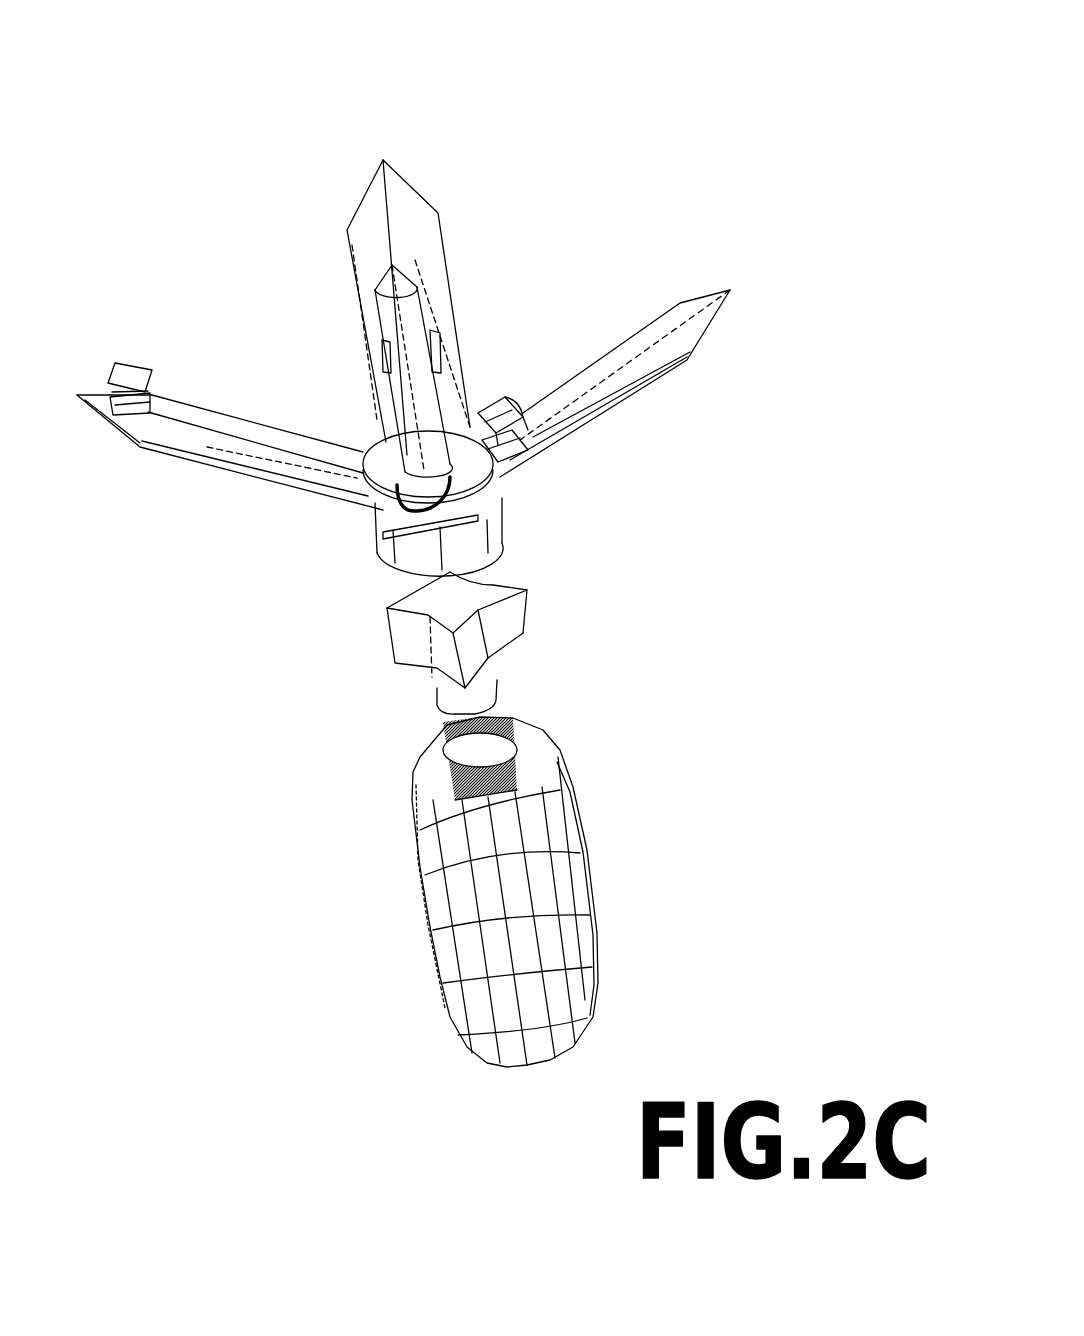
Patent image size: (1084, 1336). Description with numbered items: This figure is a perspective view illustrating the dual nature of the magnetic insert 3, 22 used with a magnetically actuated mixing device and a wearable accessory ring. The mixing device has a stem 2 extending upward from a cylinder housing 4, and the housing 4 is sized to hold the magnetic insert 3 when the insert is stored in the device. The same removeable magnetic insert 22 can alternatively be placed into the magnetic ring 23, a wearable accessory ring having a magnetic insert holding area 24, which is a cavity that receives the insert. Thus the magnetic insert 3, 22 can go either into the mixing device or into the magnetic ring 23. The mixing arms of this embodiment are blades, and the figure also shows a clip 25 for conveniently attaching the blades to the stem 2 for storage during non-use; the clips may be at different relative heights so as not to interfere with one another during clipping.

The stem 2 is at (428, 417).
The magnetic insert 3 is at (440, 698).
The cylinder housing 4 is at (493, 527).
The removeable magnetic insert 22 is at (515, 642).
The magnetic ring 23 is at (463, 1043).
The magnetic insert holding area 24 is at (470, 755).
The clip 25 is at (122, 373).